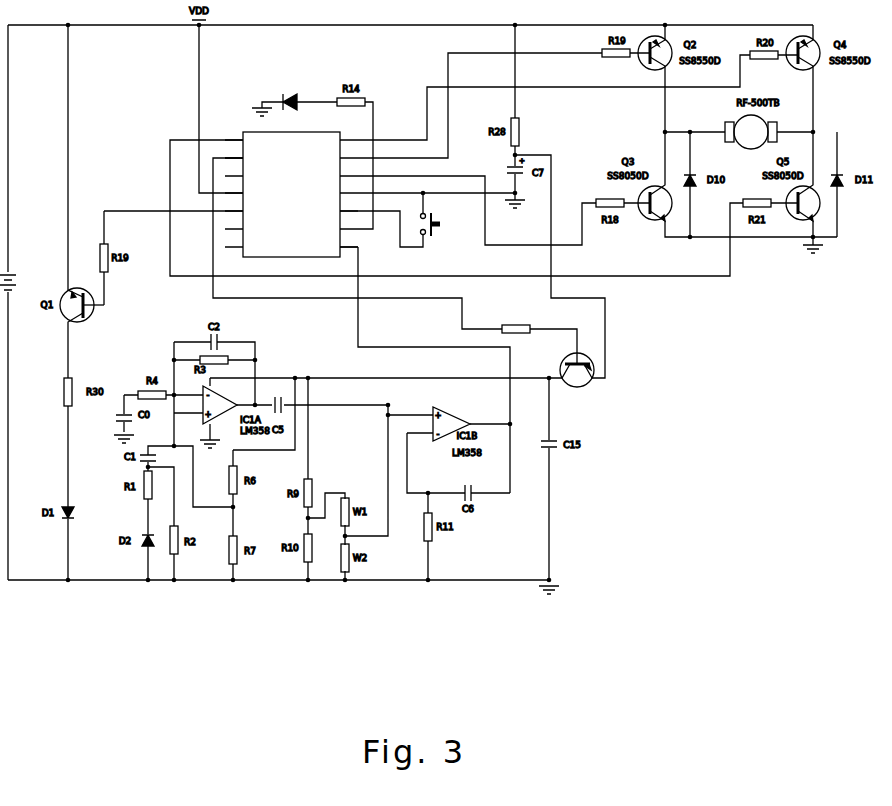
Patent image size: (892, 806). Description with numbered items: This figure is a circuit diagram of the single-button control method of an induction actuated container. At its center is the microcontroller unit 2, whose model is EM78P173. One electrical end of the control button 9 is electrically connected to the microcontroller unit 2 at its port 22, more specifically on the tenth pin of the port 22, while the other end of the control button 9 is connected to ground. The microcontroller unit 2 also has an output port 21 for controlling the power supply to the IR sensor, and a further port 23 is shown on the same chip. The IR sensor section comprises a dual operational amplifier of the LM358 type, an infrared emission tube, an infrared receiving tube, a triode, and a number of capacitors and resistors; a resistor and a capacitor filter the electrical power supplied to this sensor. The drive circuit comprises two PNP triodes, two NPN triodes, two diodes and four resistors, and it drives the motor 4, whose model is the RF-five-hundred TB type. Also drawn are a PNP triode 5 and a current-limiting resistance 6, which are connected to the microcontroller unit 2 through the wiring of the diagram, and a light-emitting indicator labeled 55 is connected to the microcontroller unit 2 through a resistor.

The microcontroller unit 2 is at (293, 192).
The output port of the microcontroller 21 is at (245, 161).
The input port of the microcontroller 22 is at (339, 213).
The microcontroller output pin 23 is at (339, 247).
The motor 4 is at (751, 132).
The PNP triode 5 is at (571, 380).
The current-limiting resistance 6 is at (516, 319).
The control button 9 is at (407, 220).
The LED indicator 55 is at (290, 90).